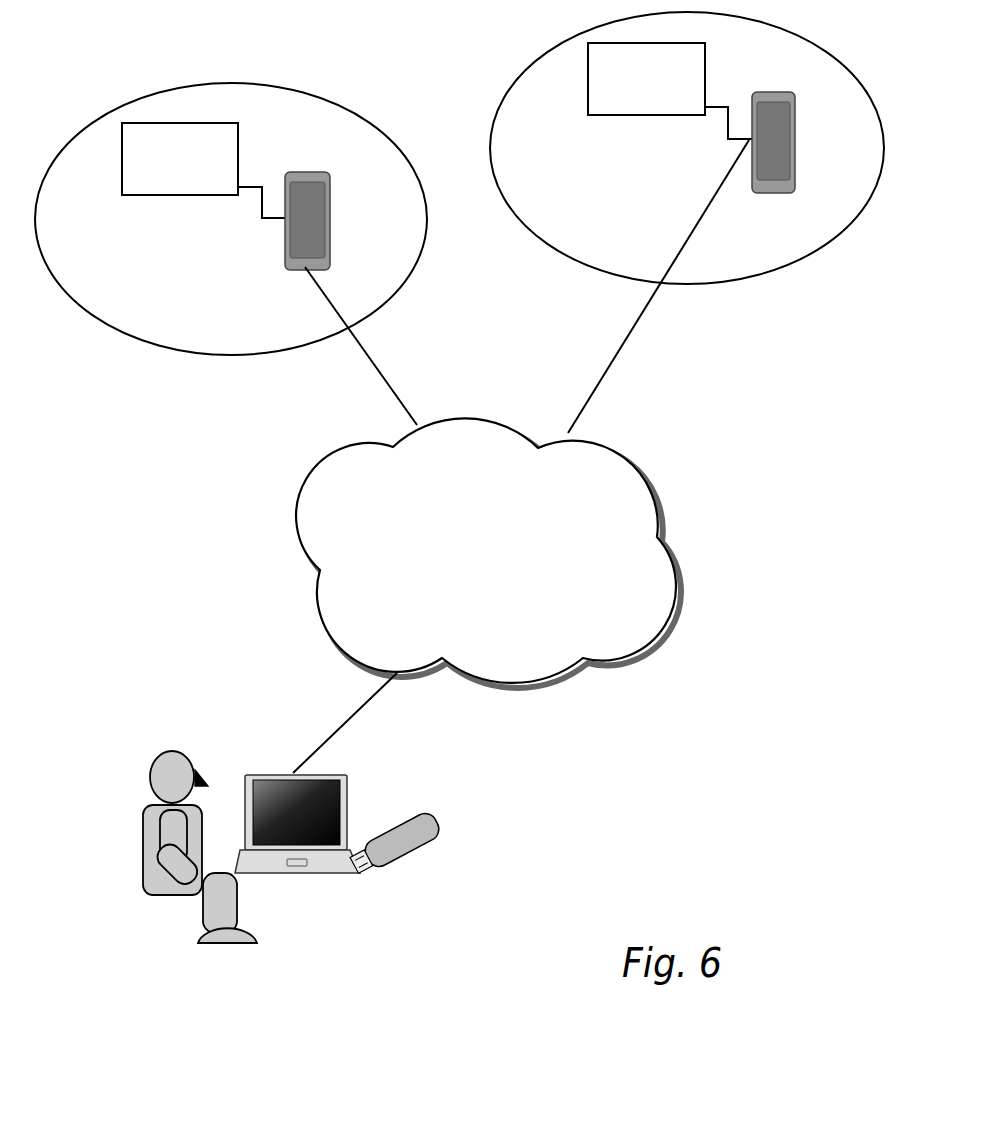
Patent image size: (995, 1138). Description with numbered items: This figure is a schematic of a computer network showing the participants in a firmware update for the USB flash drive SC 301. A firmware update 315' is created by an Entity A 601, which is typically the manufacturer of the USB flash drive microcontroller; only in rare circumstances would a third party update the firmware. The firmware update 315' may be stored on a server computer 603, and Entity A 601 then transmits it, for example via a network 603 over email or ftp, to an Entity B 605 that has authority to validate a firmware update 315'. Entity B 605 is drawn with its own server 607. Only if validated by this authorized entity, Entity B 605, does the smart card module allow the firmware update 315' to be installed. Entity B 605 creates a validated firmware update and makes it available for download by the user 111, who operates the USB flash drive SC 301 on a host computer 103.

The firmware update 315' is at (164, 170).
The Entity A 601 is at (205, 352).
The Entity B 605 is at (775, 268).
The server computer / network 603 is at (325, 220).
The server of entity B 607 is at (792, 140).
The user 111 is at (140, 855).
The host computer 103 is at (332, 872).
The USB flash drive SC 301 is at (427, 845).